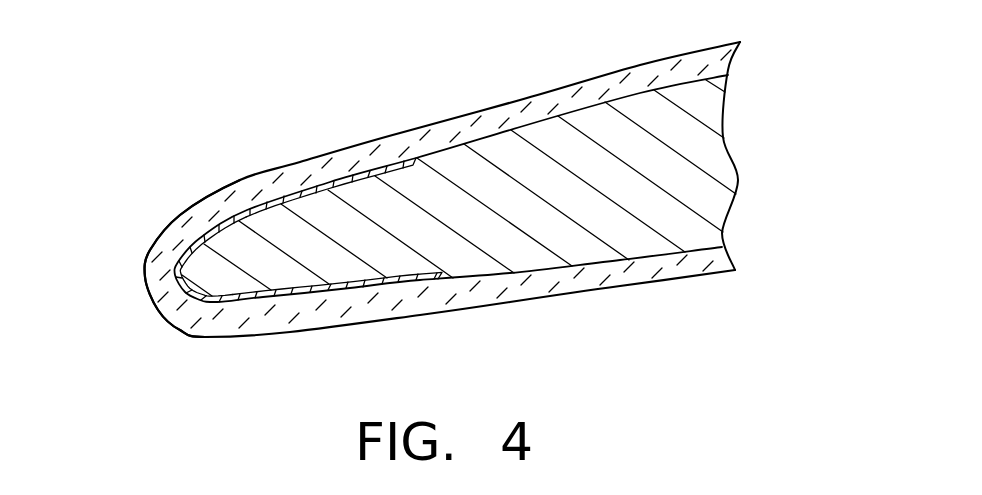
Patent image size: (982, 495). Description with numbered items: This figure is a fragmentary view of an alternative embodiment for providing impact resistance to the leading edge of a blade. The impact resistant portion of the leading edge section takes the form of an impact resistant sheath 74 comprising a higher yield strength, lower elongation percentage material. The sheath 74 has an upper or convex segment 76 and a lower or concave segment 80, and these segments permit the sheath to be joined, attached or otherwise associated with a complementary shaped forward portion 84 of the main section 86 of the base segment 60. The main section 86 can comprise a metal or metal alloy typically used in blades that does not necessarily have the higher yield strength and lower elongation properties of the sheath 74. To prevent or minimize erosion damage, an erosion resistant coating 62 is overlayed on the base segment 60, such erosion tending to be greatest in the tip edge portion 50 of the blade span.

The tip edge portion of span 50 is at (148, 316).
The base segment 60 is at (752, 119).
The erosion resistant coating 62 is at (193, 223).
The impact resistant sheath 74 is at (360, 173).
The upper or convex segment 76 is at (273, 198).
The lower or concave segment 80 is at (312, 300).
The forward portion 84 is at (363, 243).
The main section 86 is at (697, 182).